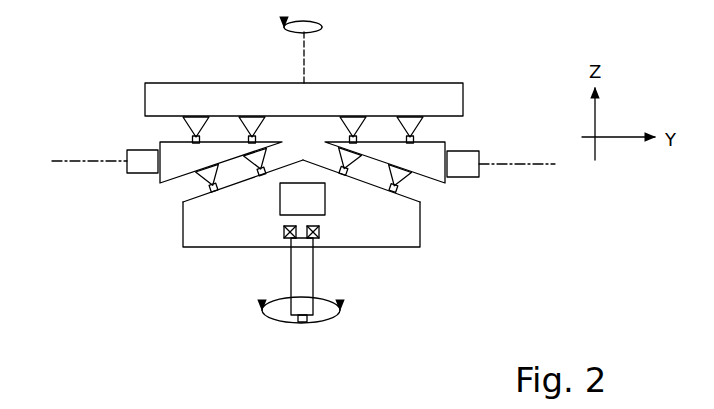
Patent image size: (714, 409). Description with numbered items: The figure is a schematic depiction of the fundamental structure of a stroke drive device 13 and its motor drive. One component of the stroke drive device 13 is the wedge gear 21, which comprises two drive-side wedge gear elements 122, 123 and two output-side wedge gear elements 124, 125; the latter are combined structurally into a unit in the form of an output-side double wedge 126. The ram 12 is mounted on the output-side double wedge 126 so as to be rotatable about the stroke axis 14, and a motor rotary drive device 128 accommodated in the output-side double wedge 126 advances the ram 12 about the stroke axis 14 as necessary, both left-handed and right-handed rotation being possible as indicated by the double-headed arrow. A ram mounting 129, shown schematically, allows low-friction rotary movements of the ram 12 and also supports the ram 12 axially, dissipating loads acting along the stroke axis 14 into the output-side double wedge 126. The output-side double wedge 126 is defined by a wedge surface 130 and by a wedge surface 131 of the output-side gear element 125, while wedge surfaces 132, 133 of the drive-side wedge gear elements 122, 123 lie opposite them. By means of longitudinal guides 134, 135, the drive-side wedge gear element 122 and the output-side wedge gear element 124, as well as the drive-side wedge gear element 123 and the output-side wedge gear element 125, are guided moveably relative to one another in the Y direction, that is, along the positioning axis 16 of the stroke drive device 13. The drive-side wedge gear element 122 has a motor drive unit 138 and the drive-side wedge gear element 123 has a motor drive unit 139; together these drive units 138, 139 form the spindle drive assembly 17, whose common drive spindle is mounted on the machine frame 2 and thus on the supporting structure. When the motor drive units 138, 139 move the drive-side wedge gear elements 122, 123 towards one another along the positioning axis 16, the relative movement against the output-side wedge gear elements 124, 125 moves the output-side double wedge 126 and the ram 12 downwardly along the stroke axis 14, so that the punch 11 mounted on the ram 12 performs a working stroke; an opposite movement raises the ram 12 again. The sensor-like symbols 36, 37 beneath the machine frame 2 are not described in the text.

The machine frame 2 is at (462, 78).
The punch 11 is at (288, 325).
The ram 12 is at (307, 300).
The stroke drive device 13 is at (312, 238).
The stroke axis 14 is at (305, 66).
The positioning axis 16 is at (88, 162).
The spindle drive assembly 17 is at (522, 175).
The wedge gear 21 is at (318, 152).
The left sensor 36 is at (178, 132).
The right sensor 37 is at (428, 132).
The drive-side wedge gear element 122 is at (205, 171).
The drive-side wedge gear element 123 is at (445, 171).
The output-side wedge gear element 124 is at (210, 203).
The output-side wedge gear element 125 is at (397, 207).
The output-side double wedge 126 is at (198, 255).
The motor rotary drive device 128 is at (318, 212).
The ram mounting 129 is at (320, 240).
The wedge surface 130 is at (240, 185).
The wedge surface 131 is at (363, 193).
The wedge surface 132 is at (224, 165).
The wedge surface 133 is at (383, 160).
The longitudinal guide 134 is at (186, 186).
The longitudinal guide 135 is at (418, 188).
The motor drive unit 138 is at (113, 143).
The motor drive unit 139 is at (490, 147).